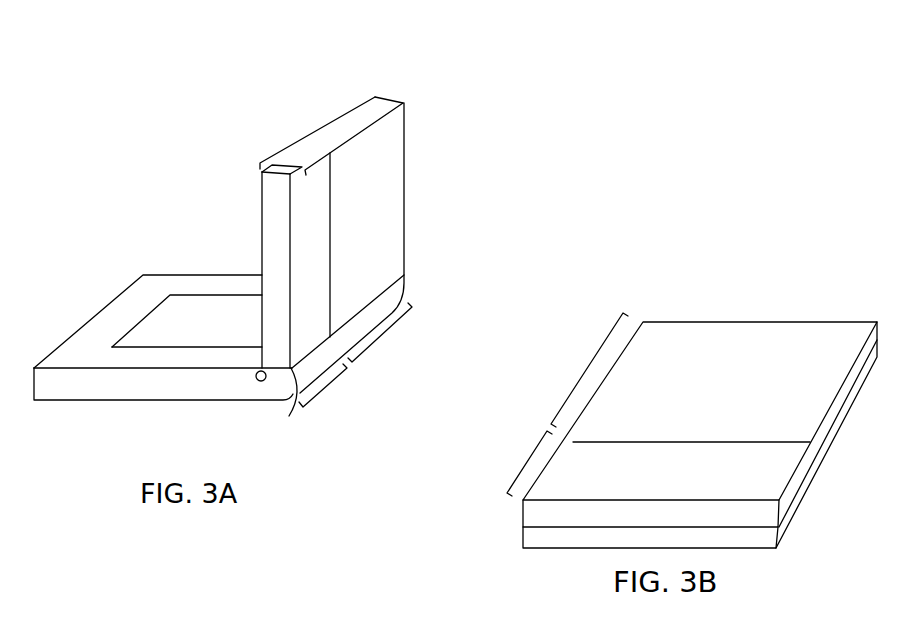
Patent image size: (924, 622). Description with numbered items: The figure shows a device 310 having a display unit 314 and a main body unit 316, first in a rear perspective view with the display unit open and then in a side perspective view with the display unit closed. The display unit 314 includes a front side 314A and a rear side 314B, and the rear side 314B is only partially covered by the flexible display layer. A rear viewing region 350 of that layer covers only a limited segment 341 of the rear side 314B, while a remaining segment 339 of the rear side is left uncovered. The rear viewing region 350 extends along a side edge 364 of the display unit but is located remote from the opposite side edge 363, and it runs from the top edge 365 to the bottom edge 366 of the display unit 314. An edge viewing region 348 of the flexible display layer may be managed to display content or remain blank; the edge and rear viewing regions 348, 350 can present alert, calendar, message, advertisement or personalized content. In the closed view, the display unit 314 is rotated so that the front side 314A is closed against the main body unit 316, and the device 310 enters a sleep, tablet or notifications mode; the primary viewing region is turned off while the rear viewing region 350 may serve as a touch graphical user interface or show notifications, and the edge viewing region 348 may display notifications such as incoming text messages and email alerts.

In FIG. 3A, the device 310 is at (112, 139).
In FIG. 3A, the display unit 314 is at (372, 84).
In FIG. 3B, the display unit 314 is at (516, 514).
In FIG. 3A, the main body unit 316 is at (55, 414).
In FIG. 3B, the main body unit 316 is at (516, 532).
In FIG. 3A, the front side 314A is at (262, 235).
In FIG. 3A, the rear side 314B is at (385, 213).
In FIG. 3B, the rear side 314B is at (728, 335).
In FIG. 3A, the remaining segment 339 is at (385, 342).
In FIG. 3B, the remaining segment 339 is at (583, 368).
In FIG. 3A, the limited segment 341 is at (328, 388).
In FIG. 3B, the limited segment 341 is at (523, 468).
In FIG. 3A, the edge viewing region 348 is at (279, 165).
In FIG. 3B, the edge viewing region 348 is at (763, 517).
In FIG. 3B, the rear viewing region 350 is at (780, 472).
In FIG. 3A, the opposite side edge 363 is at (405, 146).
In FIG. 3A, the side edge 364 is at (270, 202).
In FIG. 3A, the top edge 365 is at (319, 136).
In FIG. 3A, the bottom edge 366 is at (291, 403).